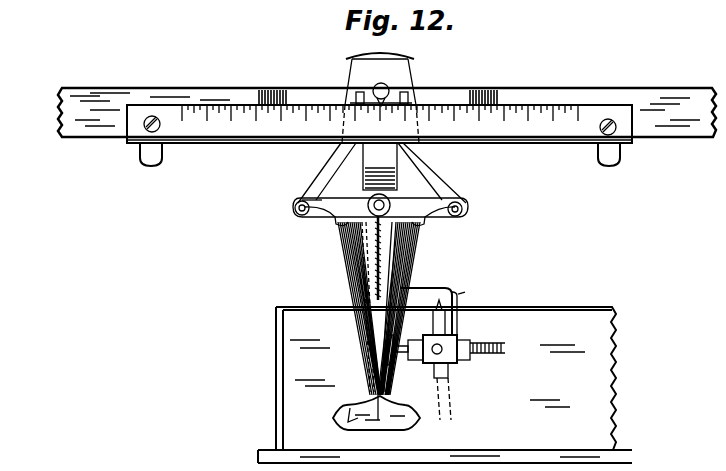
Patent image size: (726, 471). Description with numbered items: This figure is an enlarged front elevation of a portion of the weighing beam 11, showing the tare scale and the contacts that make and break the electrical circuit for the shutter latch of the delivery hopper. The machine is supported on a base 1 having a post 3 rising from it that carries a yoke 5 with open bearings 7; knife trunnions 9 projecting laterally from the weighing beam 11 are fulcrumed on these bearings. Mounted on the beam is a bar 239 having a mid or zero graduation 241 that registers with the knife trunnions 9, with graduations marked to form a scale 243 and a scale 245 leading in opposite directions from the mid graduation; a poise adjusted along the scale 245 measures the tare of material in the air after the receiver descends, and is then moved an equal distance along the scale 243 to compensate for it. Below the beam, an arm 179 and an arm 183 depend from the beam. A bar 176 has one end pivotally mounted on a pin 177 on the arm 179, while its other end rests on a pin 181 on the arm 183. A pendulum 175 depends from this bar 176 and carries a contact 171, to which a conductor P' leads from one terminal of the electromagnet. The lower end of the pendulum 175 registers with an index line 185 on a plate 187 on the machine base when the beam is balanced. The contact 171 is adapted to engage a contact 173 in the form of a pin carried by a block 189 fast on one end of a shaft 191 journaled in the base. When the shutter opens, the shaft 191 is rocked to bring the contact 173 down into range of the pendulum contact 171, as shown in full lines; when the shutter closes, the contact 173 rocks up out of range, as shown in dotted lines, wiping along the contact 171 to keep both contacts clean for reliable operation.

The base 1 is at (564, 312).
The post 3 is at (412, 259).
The yoke 5 is at (400, 187).
The open bearings 7 is at (356, 97).
The knife trunnions 9 is at (410, 100).
The weighing beam 11 is at (657, 96).
The contact 171 is at (393, 337).
The contact 173 is at (433, 365).
The pendulum 175 is at (362, 262).
The bar 176 is at (431, 218).
The pin 177 is at (463, 208).
The arm 179 is at (430, 153).
The pin 181 is at (300, 217).
The arm 183 is at (338, 154).
The index line 185 is at (396, 430).
The plate 187 is at (355, 418).
The block 189 is at (450, 380).
The shaft 191 is at (462, 334).
The bar 239 is at (528, 143).
The mid or zero graduation 241 is at (380, 98).
The scale 243 is at (258, 104).
The scale 245 is at (510, 104).
The conductor P' is at (340, 258).